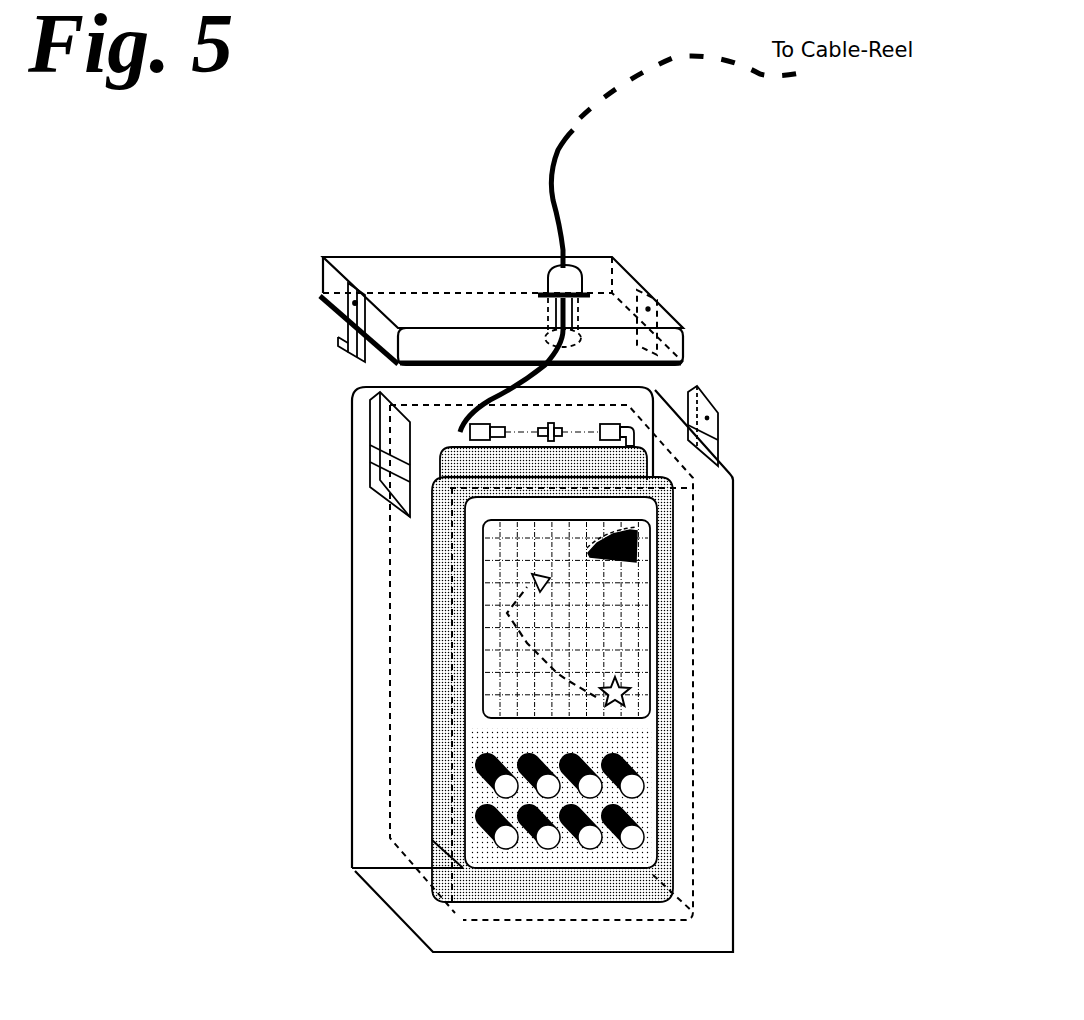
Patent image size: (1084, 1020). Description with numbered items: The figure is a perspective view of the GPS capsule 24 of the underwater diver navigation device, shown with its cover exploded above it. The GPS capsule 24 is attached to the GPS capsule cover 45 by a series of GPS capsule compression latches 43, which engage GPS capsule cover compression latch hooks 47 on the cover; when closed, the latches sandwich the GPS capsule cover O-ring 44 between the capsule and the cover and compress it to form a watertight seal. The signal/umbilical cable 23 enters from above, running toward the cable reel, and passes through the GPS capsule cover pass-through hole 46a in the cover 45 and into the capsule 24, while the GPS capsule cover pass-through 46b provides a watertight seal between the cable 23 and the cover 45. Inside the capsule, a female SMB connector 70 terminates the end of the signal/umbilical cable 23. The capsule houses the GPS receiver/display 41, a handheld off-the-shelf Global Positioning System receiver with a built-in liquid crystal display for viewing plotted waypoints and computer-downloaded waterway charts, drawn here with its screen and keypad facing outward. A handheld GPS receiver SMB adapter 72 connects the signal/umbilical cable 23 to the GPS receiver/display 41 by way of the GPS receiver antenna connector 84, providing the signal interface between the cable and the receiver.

The Signal/Umbilical Cable 23 is at (550, 187).
The GPS Capsule 24 is at (718, 715).
The GPS Receiver/Display 41 is at (440, 655).
The GPS Capsule Compression Latches 43 is at (378, 430).
The GPS Capsule Cover O-Ring 44 is at (683, 362).
The GPS Capsule Cover 45 is at (325, 268).
The GPS Capsule Cover Pass-through Hole 46a is at (582, 316).
The GPS Capsule Cover Pass-through 46b is at (588, 272).
The GPS Capsule Cover Compression Latch Hook 47 is at (338, 343).
The Female SMB Connector 70 is at (465, 449).
The Handheld GPS Receiver SMB Adapter 72 is at (555, 440).
The GPS Receiver Antenna Connector 84 is at (634, 433).